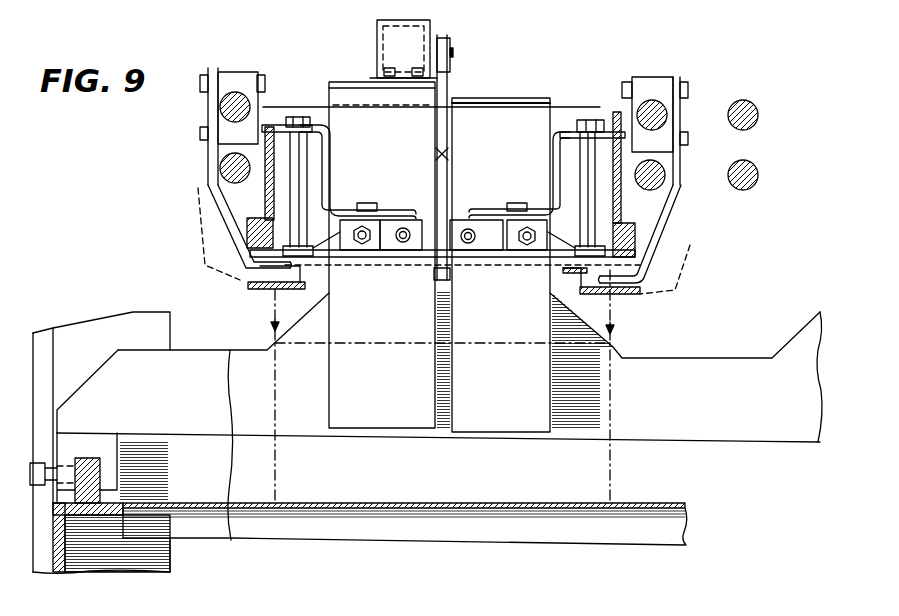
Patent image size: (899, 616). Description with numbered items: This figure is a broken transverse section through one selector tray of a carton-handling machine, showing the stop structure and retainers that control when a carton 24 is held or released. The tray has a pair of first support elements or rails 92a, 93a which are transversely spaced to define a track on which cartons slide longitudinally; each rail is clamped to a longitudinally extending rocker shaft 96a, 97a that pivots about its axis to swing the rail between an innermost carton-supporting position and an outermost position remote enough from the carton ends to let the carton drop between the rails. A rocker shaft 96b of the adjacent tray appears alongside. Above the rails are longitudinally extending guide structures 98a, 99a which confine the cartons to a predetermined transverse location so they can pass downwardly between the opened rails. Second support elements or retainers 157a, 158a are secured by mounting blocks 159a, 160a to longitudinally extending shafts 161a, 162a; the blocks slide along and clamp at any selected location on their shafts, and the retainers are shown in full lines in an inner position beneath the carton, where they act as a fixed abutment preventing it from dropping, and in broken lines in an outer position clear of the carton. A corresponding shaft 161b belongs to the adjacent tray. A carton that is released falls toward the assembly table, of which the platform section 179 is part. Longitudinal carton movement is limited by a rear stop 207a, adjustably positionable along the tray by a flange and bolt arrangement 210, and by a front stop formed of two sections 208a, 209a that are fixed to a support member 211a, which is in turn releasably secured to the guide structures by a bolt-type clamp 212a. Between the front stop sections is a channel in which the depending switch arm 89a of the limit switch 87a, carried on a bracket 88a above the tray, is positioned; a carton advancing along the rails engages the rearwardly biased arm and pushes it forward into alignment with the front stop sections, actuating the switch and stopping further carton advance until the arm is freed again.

The carton 24 is at (321, 106).
The limit switch 87a is at (376, 32).
The bracket 88a is at (376, 48).
The switch arm 89a is at (448, 155).
The rail 92a is at (258, 290).
The rail 93a is at (624, 292).
The rocker shaft 96a is at (220, 168).
The rocker shaft 96b is at (757, 173).
The rocker shaft 97a is at (664, 182).
The guide structure 98a is at (276, 197).
The guide structure 99a is at (613, 177).
The retainer 157a is at (226, 209).
The retainer 158a is at (656, 238).
The mounting block 159a is at (208, 135).
The mounting block 160a is at (688, 138).
The shaft 161a is at (218, 107).
The shaft 161b is at (750, 110).
The shaft 162a is at (660, 115).
The platform section 179 is at (393, 512).
The rear stop 207a is at (648, 440).
The front stop section 208a is at (350, 425).
The front stop section 209a is at (475, 428).
The flange and bolt arrangement 210 is at (87, 457).
The support member 211a is at (400, 254).
The bolt-type clamp 212a is at (302, 163).